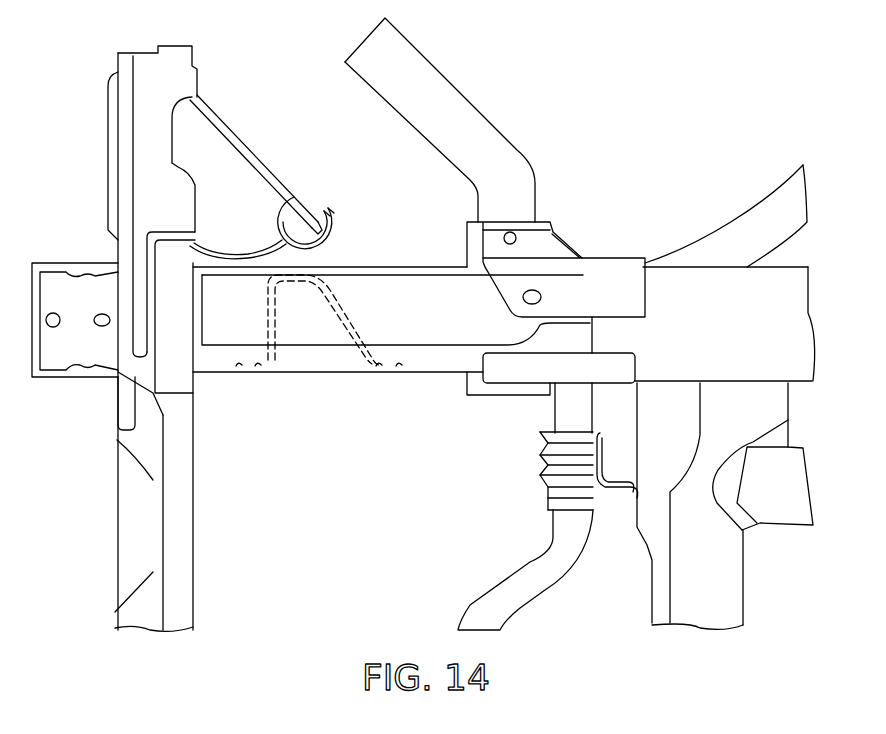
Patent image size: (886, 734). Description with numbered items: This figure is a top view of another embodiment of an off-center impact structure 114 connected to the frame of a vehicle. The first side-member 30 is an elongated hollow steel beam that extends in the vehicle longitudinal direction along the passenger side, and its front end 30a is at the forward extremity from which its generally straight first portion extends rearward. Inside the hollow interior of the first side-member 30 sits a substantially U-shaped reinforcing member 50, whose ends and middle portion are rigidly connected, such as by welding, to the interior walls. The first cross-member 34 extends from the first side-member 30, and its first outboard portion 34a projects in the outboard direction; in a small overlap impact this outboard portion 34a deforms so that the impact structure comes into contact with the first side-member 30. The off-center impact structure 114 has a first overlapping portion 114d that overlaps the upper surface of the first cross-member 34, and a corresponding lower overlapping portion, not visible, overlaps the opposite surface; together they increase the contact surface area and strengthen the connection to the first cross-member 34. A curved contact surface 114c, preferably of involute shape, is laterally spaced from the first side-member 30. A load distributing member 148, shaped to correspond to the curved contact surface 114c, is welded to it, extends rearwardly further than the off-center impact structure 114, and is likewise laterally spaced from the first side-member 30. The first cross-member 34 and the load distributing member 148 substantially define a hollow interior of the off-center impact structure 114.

The first side-member 30 is at (814, 310).
The front end 30a is at (14, 288).
The first cross-member 34 is at (108, 518).
The first outboard portion 34a is at (143, 50).
The reinforcing member 50 is at (360, 303).
The off-center impact structure 114 is at (238, 122).
The curved contact surface 114c is at (290, 197).
The first overlapping portion 114d is at (168, 142).
The load distributing member 148 is at (324, 235).